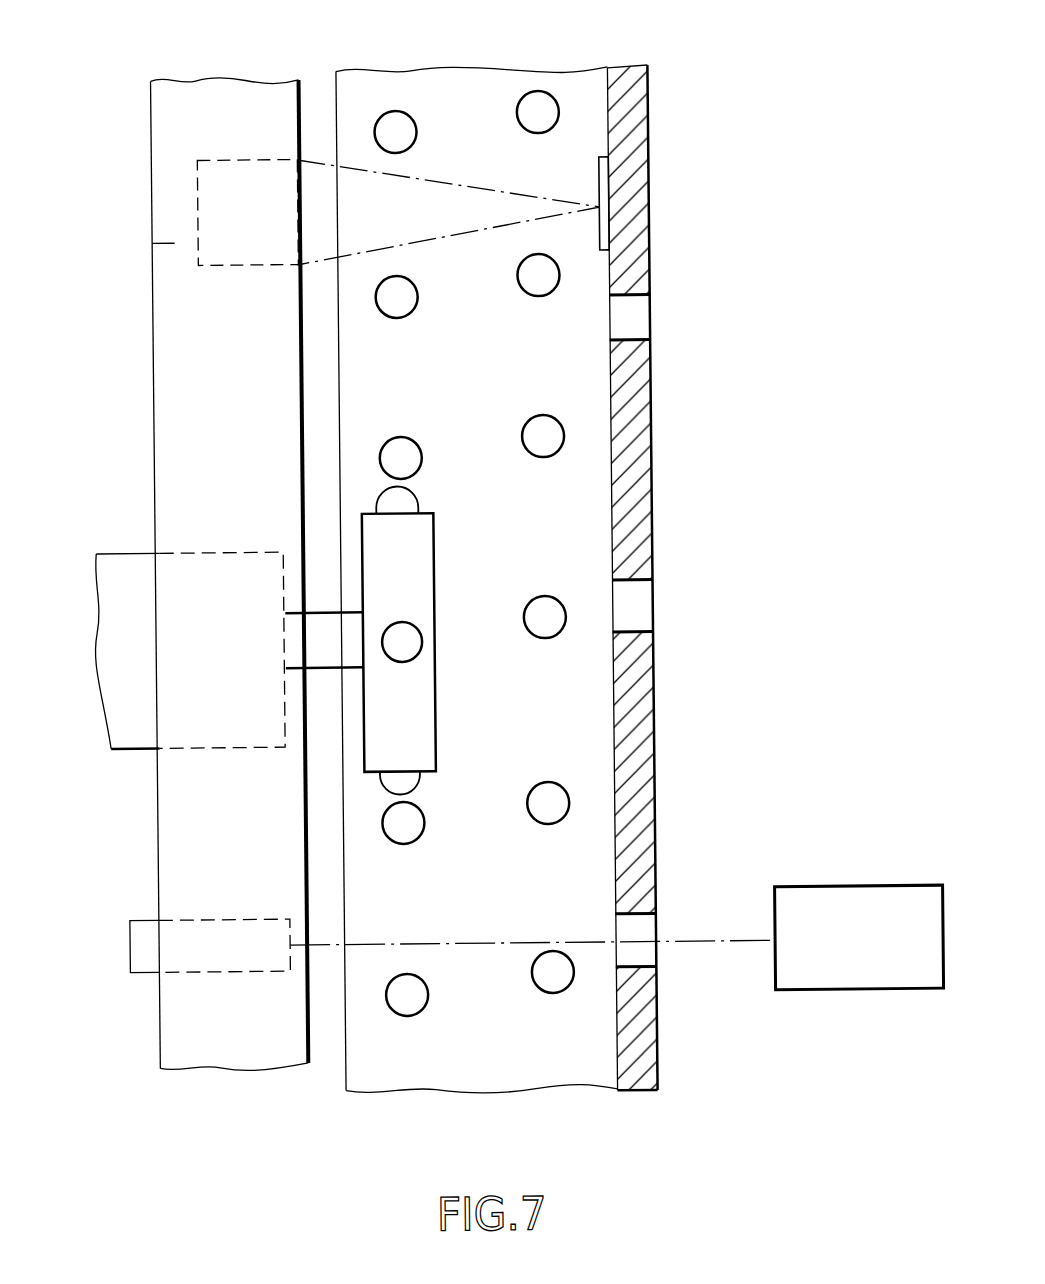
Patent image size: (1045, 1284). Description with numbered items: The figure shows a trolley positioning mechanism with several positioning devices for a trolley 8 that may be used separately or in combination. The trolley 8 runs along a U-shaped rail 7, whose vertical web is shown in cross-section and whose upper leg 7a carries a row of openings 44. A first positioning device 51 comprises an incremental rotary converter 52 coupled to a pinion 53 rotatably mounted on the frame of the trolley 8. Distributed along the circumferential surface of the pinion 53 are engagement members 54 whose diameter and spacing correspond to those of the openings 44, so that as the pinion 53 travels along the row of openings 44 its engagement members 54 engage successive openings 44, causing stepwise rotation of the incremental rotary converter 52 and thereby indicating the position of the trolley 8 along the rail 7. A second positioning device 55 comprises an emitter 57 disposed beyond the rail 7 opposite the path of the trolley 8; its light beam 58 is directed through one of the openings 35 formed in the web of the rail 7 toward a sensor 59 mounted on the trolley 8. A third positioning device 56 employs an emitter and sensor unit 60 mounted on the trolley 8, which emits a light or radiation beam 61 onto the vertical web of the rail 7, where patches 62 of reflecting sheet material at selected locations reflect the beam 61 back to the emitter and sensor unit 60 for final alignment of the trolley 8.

The rail 7 is at (634, 1047).
The upper leg 7a is at (482, 1024).
The trolley 8 is at (253, 1019).
The openings 35 is at (632, 322).
The openings 44 is at (400, 137).
The first positioning device 51 is at (112, 764).
The incremental rotary converter 52 is at (127, 572).
The pinion 53 is at (398, 552).
The engagement members 54 is at (402, 633).
The positioning device 55 is at (836, 1008).
The positioning device 56 is at (178, 148).
The emitter 57 is at (874, 998).
The light beam 58 is at (696, 938).
The sensor 59 is at (136, 972).
The emitter and sensor unit 60 is at (247, 213).
The light or radiation beam 61 is at (367, 160).
The patches 62 is at (601, 167).